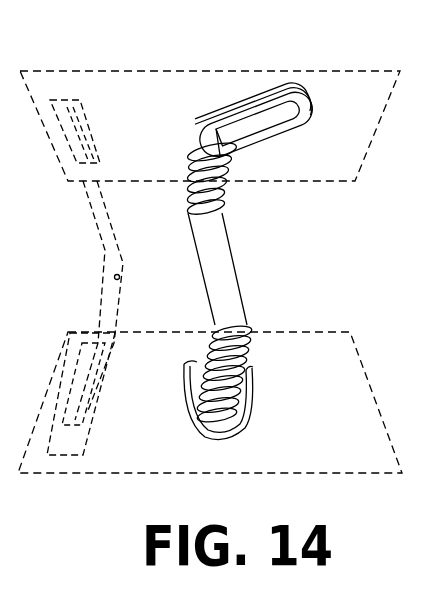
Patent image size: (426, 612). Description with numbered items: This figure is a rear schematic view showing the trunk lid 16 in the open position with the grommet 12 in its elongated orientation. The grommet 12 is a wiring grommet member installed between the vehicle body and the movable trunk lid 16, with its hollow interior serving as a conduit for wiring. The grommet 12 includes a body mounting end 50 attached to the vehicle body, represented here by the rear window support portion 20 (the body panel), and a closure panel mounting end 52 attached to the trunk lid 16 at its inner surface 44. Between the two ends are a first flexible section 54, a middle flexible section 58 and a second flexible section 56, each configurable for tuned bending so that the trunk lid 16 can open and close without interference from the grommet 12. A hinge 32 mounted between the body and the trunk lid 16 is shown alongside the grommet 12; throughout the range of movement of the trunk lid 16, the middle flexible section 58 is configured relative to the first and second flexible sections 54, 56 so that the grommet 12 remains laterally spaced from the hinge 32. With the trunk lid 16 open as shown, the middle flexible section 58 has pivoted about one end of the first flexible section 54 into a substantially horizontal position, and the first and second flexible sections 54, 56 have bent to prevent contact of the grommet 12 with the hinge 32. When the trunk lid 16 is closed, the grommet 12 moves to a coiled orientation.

The grommet 12 is at (257, 282).
The trunk lid 16 is at (240, 76).
The rear window support portion 20 is at (293, 448).
The hinge 32 is at (92, 255).
The inner surface 44 is at (343, 181).
The body mounting end 50 is at (182, 388).
The closure panel mounting end 52 is at (248, 118).
The first flexible section 54 is at (244, 352).
The second flexible section 56 is at (183, 182).
The middle flexible section 58 is at (202, 258).